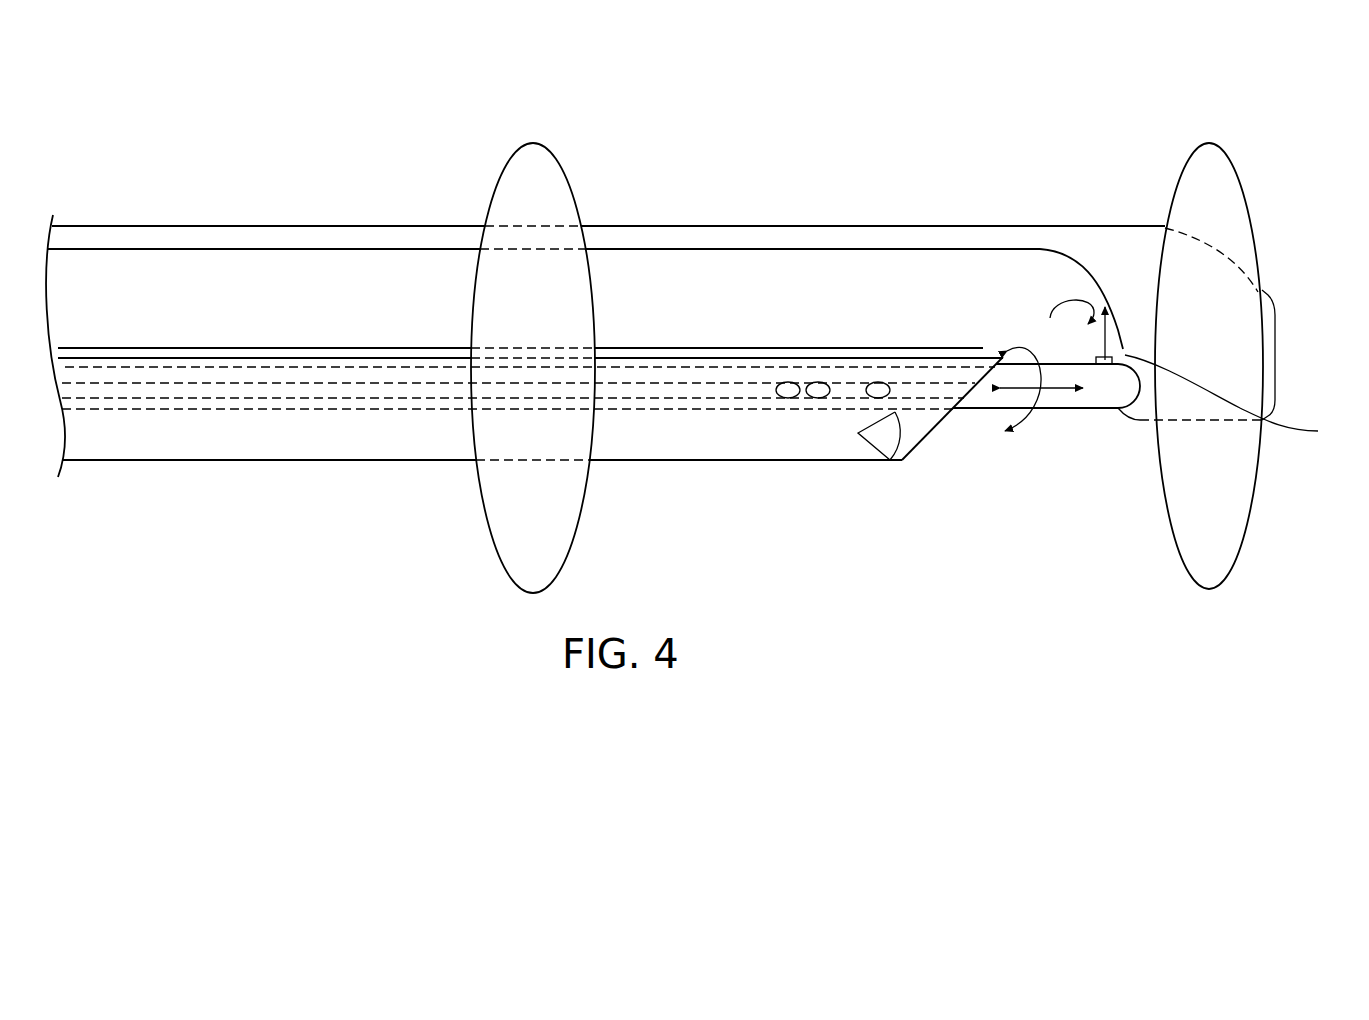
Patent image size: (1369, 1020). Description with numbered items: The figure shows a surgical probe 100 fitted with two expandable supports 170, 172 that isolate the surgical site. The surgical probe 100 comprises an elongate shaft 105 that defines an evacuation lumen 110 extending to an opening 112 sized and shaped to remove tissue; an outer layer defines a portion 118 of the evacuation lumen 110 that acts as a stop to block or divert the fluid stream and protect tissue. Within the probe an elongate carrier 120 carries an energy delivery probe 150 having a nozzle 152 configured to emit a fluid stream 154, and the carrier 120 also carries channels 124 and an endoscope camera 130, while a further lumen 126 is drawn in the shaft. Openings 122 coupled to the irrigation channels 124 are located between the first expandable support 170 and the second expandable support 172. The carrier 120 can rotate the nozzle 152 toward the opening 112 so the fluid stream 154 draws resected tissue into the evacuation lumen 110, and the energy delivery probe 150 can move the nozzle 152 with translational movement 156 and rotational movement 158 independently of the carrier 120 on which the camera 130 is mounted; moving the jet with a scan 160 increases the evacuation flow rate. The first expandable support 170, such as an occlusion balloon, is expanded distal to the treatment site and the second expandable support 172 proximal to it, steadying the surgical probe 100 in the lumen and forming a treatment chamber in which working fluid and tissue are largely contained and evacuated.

The surgical probe 100 is at (610, 114).
The elongate shaft 105 is at (188, 238).
The evacuation lumen 110 is at (402, 288).
The opening 112 is at (1246, 367).
The portion 118 is at (1098, 290).
The elongate carrier 120 is at (407, 464).
The openings 122 is at (878, 382).
The channels 124 is at (678, 398).
The inner lumen 126 is at (112, 410).
The endoscope camera 130 is at (887, 463).
The energy delivery probe 150 is at (1097, 409).
The nozzle 152 is at (1106, 366).
The fluid stream 154 is at (1116, 352).
The translational movement 156 is at (1055, 392).
The rotational movement 158 is at (1028, 345).
The scan 160 is at (1050, 318).
The first expandable support 170 is at (1176, 185).
The second expandable support 172 is at (493, 185).